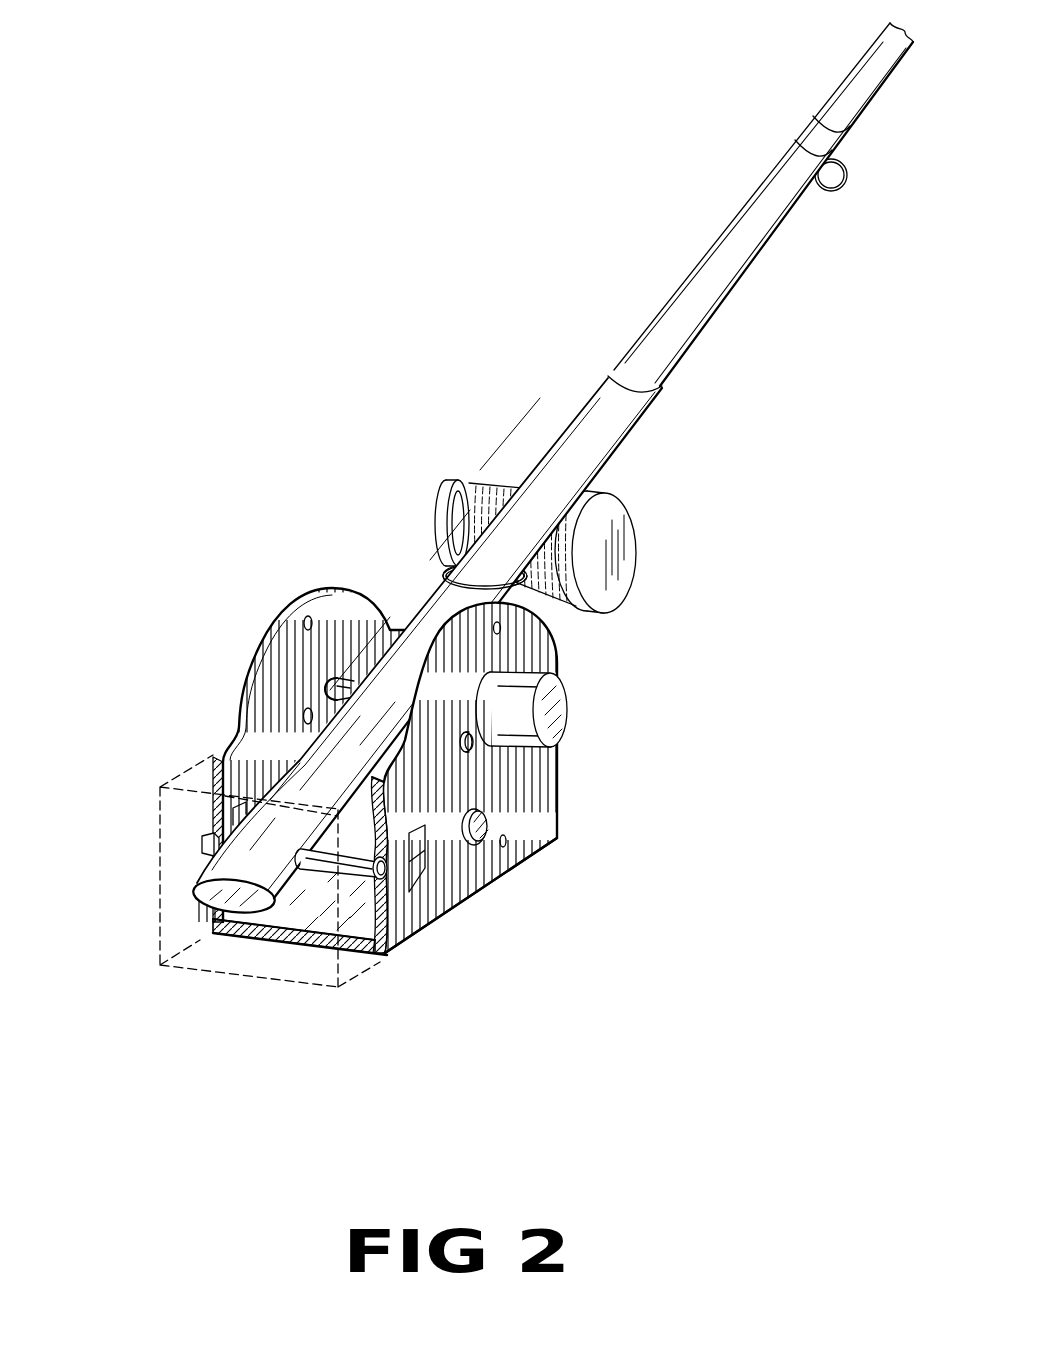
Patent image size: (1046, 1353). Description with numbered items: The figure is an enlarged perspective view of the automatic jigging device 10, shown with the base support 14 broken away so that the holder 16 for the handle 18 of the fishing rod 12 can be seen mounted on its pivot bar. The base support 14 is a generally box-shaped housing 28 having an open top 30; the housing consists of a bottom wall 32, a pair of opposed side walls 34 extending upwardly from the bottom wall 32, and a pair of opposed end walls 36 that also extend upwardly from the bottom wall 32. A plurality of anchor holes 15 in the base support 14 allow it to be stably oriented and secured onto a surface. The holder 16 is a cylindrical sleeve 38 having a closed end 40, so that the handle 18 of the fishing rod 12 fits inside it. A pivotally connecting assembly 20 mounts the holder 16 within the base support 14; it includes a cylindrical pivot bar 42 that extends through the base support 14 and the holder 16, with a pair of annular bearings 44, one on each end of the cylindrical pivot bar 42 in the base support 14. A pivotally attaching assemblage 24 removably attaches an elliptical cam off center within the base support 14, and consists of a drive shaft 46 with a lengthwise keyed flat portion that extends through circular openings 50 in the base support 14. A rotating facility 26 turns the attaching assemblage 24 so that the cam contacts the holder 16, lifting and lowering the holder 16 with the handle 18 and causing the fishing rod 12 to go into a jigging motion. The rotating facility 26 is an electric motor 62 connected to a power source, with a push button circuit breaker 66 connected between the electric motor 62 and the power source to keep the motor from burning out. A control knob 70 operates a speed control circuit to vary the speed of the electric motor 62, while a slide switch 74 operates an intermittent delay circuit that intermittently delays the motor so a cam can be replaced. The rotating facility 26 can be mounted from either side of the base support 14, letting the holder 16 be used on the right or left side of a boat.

The automatic jigging device 10 is at (484, 322).
The fishing rod 12 is at (653, 311).
The base support 14 is at (580, 823).
The anchor holes 15 is at (309, 618).
The holder 16 is at (404, 592).
The handle 18 is at (553, 452).
The pivotally connecting assembly 20 is at (397, 892).
The pivotally attaching assemblage 24 is at (330, 655).
The rotating facility 26 is at (582, 706).
The generally box-shaped housing 28 is at (556, 862).
The open top 30 is at (271, 604).
The bottom wall 32 is at (325, 918).
The side walls 34 is at (283, 645).
The end walls 36 is at (158, 896).
The cylindrical sleeve 38 is at (438, 562).
The closed end 40 is at (213, 905).
The cylindrical pivot bar 42 is at (349, 925).
The annular bearings 44 is at (202, 847).
The drive shaft 46 is at (343, 684).
The circular openings 50 is at (323, 689).
The electric motor 62 is at (561, 731).
The push button circuit breaker 66 is at (471, 750).
The control knob 70 is at (481, 843).
The slide switch 74 is at (420, 874).